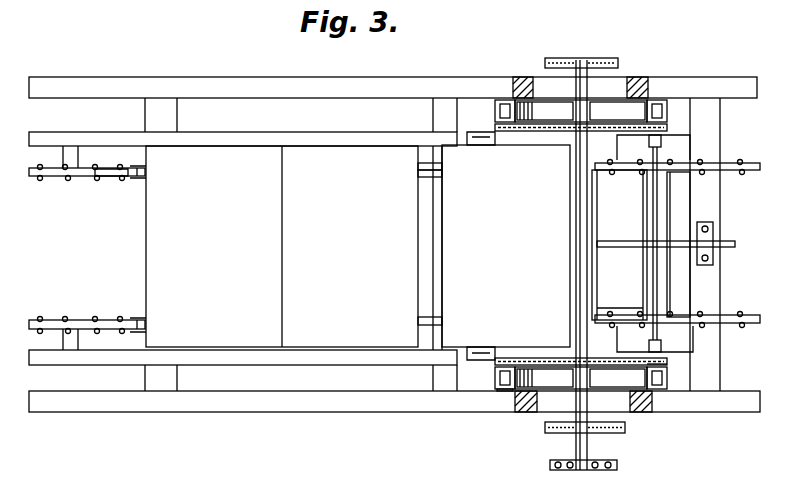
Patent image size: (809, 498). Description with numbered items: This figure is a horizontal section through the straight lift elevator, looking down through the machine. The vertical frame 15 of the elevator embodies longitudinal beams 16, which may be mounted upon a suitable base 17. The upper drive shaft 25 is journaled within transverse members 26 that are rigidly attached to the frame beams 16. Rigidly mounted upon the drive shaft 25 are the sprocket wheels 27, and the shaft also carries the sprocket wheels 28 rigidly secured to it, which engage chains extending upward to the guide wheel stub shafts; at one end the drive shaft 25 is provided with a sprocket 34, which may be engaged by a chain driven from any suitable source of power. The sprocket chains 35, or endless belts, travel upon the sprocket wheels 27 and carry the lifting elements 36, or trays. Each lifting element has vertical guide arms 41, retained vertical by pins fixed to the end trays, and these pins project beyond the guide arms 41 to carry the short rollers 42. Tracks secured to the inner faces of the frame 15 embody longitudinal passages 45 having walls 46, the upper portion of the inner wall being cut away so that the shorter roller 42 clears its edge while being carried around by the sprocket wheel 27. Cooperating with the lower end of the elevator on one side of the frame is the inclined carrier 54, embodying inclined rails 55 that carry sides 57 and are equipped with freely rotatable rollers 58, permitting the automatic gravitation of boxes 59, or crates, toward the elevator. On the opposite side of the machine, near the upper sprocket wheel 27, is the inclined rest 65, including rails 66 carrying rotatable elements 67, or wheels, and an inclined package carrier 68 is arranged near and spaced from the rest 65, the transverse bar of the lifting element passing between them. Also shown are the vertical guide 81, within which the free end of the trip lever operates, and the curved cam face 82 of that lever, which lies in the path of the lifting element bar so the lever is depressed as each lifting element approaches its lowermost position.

The vertical frame 15 is at (636, 77).
The longitudinal beams 16 is at (518, 77).
The base 17 is at (373, 82).
The upper drive shaft 25 is at (576, 235).
The transverse members 26 is at (540, 80).
The sprocket wheels 27 is at (562, 134).
The sprocket wheels 28 is at (601, 58).
The sprocket 34 is at (612, 468).
The sprocket chains 35 is at (492, 136).
The lifting elements 36 is at (679, 134).
The guide arms 41 is at (665, 367).
The short rollers 42 is at (657, 102).
The longitudinal passages 45 is at (502, 393).
The walls 46 is at (506, 110).
The inclined carrier 54 is at (108, 178).
The inclined rails 55 is at (53, 178).
The sides 57 is at (97, 141).
The rollers 58 is at (135, 167).
The boxes 59 is at (282, 246).
The inclined rest 65 is at (622, 316).
The rails 66 is at (622, 171).
The rotatable elements 67 is at (652, 168).
The inclined package carrier 68 is at (729, 316).
The vertical guide 81 is at (708, 240).
The cam face 82 is at (612, 241).